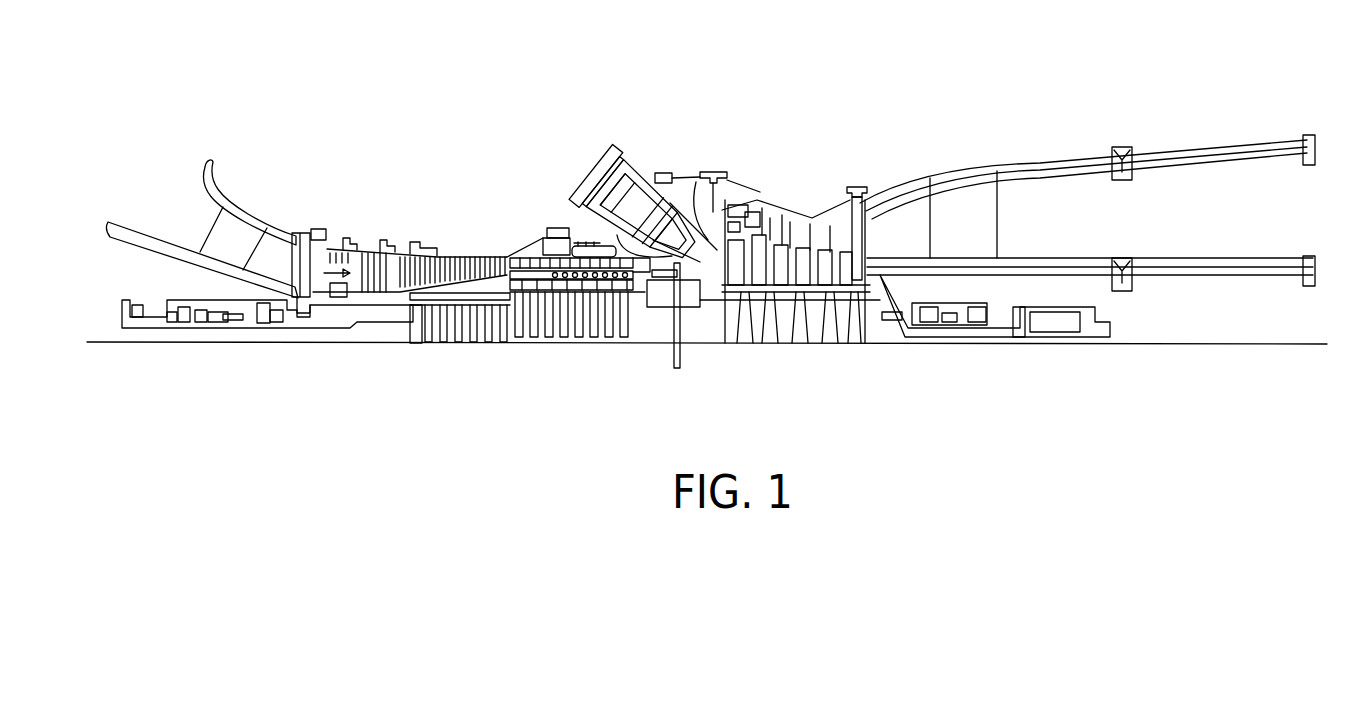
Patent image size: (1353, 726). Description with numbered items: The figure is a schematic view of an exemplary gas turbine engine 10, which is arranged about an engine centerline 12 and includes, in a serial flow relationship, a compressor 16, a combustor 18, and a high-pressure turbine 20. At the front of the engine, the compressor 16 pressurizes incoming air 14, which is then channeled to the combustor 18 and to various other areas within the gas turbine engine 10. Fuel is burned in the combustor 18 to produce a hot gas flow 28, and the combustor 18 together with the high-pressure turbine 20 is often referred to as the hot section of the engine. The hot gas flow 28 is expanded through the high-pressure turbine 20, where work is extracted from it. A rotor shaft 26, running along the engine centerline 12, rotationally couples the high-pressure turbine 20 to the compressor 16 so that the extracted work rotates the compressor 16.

The gas turbine engine 10 is at (823, 117).
The engine centerline 12 is at (1207, 348).
The air 14 is at (327, 270).
The compressor 16 is at (490, 345).
The combustor 18 is at (643, 160).
The high-pressure turbine 20 is at (796, 318).
The rotor shaft 26 is at (363, 347).
The hot gas flow 28 is at (722, 225).